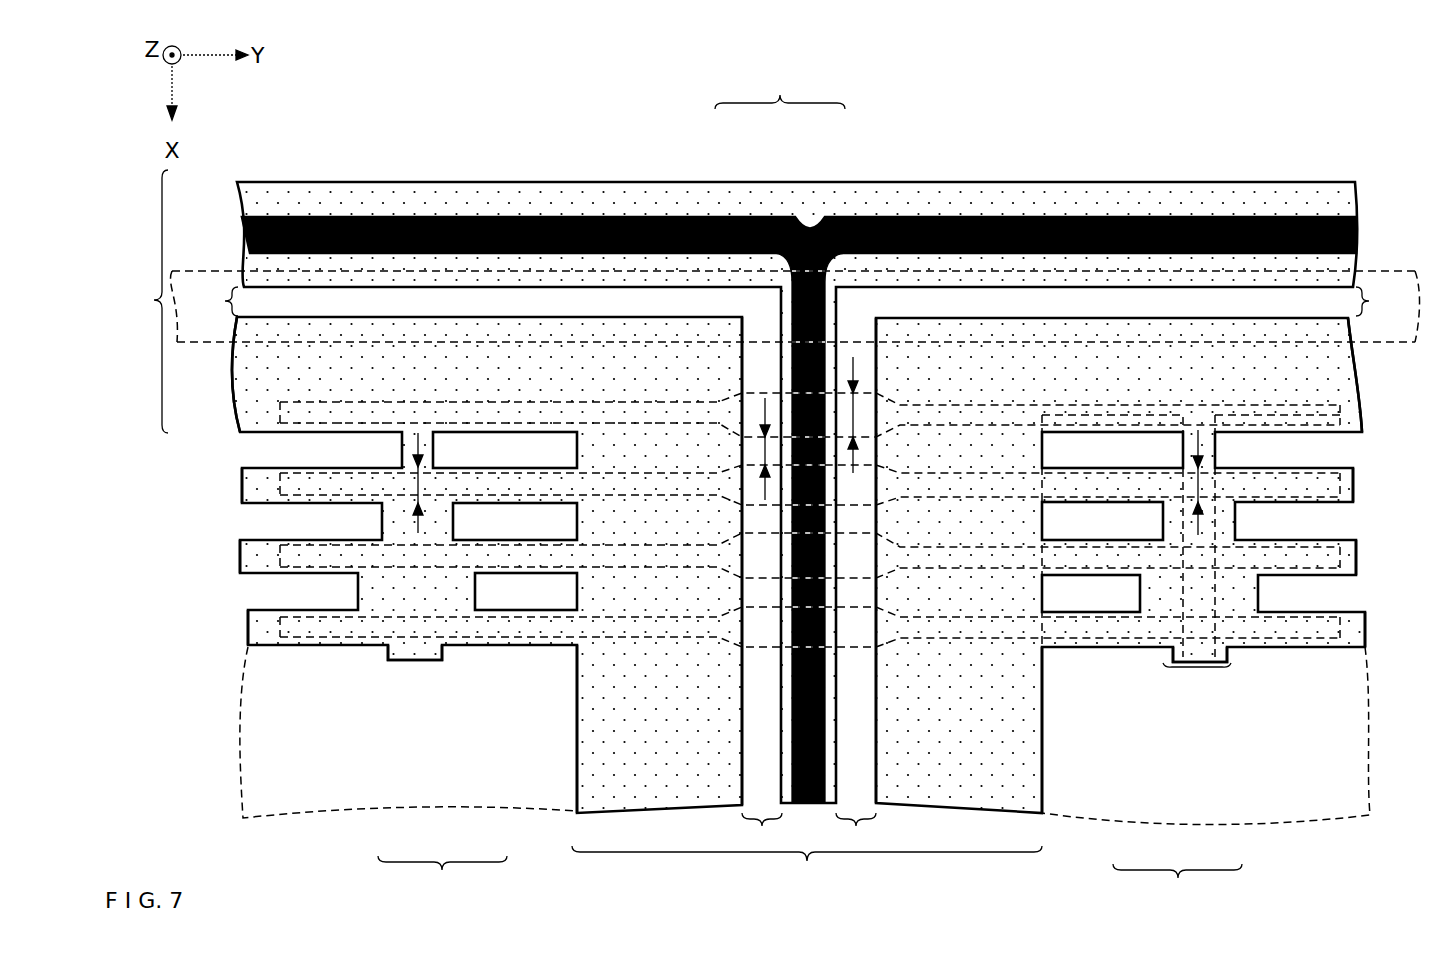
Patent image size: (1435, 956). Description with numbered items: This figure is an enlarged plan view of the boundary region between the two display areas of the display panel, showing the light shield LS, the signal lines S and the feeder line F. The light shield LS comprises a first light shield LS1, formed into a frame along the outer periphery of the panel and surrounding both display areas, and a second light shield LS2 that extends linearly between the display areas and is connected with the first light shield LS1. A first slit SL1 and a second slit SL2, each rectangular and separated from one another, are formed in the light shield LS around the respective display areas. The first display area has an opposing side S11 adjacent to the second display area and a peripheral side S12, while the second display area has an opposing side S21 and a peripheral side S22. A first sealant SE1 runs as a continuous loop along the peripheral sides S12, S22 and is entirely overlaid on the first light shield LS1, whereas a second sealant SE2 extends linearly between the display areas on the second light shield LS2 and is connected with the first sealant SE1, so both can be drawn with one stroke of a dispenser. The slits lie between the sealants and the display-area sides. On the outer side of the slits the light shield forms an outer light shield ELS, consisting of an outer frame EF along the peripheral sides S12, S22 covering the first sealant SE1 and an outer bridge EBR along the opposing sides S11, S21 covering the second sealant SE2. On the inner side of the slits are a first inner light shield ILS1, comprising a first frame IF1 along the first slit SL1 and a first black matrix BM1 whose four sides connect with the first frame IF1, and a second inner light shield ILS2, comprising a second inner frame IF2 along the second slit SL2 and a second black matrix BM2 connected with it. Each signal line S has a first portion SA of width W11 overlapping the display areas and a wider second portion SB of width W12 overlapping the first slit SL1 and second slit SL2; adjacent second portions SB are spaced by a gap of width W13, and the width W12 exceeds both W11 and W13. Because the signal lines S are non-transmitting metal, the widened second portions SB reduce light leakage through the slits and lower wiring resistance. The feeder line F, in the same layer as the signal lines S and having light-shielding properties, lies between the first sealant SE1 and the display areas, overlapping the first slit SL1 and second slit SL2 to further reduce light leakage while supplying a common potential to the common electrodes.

The light shield LS is at (544, 179).
The first light shield LS1 is at (136, 301).
The second light shield LS2 is at (807, 872).
The first slit SL1 is at (481, 569).
The second slit SL2 is at (1122, 569).
The first sealant SE1 is at (451, 217).
The second sealant SE2 is at (827, 731).
The outer frame EF is at (712, 196).
The outer bridge EBR is at (787, 320).
The outer light shield ELS is at (780, 87).
The feeder line F is at (218, 268).
The signal lines S is at (282, 627).
The opposing side of first display area S11 is at (577, 745).
The peripheral side of first display area S12 is at (241, 438).
The opposing side of second display area S21 is at (1041, 780).
The peripheral side of second display area S22 is at (1332, 437).
The first width W11 is at (420, 484).
The second width W12 is at (856, 410).
The third width W13 is at (763, 451).
The first portion SA is at (532, 500).
The second portion SB is at (771, 563).
The first black matrix BM1 is at (412, 657).
The second black matrix BM2 is at (1203, 668).
The first frame IF1 is at (575, 707).
The second inner frame IF2 is at (1012, 683).
The first inner light shield ILS1 is at (442, 877).
The second inner light shield ILS2 is at (1177, 887).